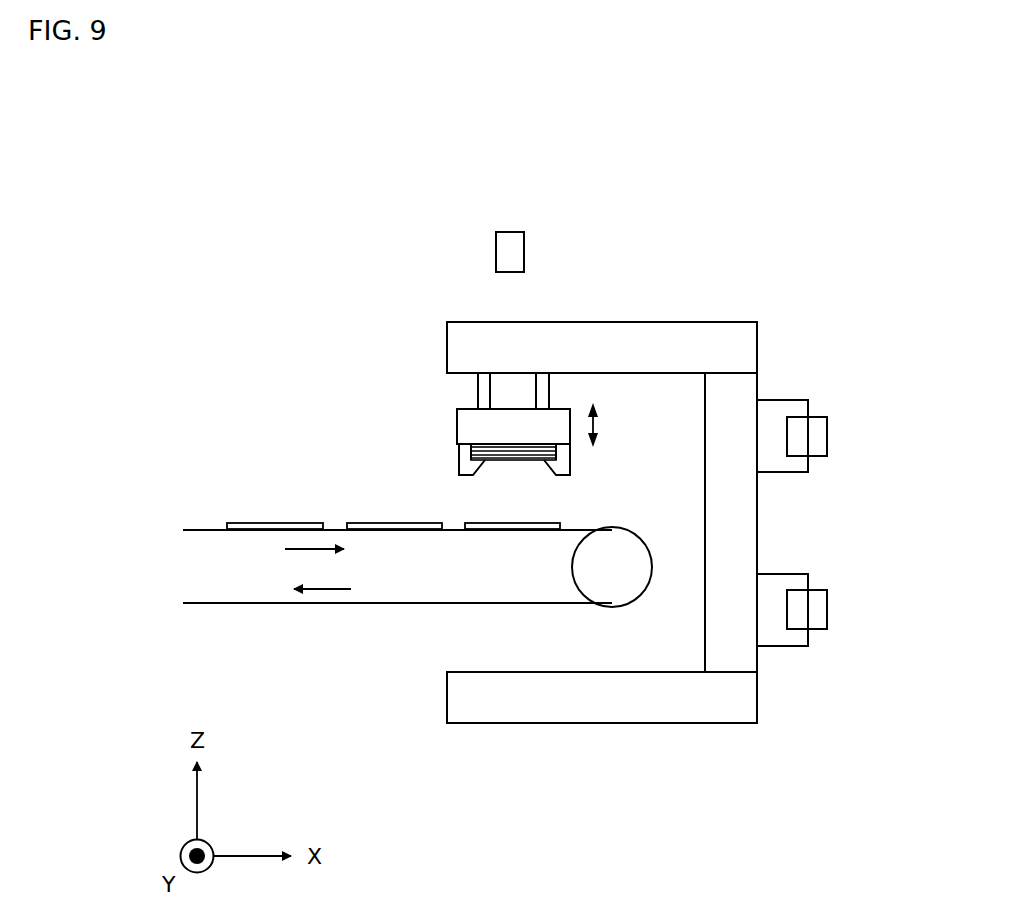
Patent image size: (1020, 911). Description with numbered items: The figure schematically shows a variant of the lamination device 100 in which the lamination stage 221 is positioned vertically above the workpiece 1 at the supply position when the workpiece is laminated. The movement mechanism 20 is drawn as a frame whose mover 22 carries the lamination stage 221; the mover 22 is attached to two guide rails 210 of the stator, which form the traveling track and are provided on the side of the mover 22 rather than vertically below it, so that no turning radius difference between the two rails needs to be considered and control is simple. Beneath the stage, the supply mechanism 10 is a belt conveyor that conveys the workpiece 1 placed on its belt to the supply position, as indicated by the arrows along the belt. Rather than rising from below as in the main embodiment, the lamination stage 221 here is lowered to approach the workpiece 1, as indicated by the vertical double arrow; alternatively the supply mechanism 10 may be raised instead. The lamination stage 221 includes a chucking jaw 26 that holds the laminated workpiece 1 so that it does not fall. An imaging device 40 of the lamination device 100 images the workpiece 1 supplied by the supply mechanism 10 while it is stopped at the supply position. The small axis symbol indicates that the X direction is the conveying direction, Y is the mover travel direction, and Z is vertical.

The lamination device 100 is at (334, 246).
The imaging device 40 is at (524, 255).
The movement mechanism 20 is at (803, 276).
The mover 22 is at (594, 313).
The guide rails 210 is at (827, 437).
The lamination stage 221 is at (457, 428).
The chucking jaw 26 is at (459, 456).
The workpiece 1 is at (278, 523).
The supply mechanism 10 is at (275, 603).